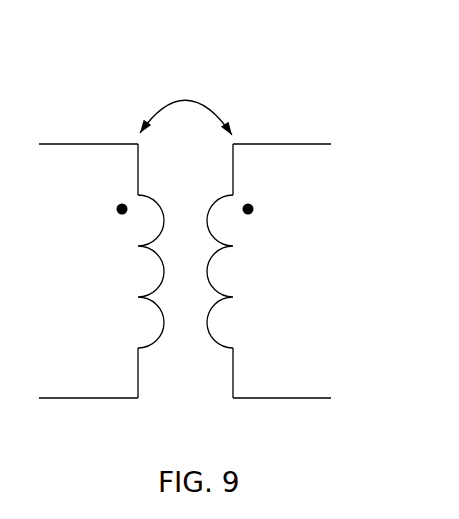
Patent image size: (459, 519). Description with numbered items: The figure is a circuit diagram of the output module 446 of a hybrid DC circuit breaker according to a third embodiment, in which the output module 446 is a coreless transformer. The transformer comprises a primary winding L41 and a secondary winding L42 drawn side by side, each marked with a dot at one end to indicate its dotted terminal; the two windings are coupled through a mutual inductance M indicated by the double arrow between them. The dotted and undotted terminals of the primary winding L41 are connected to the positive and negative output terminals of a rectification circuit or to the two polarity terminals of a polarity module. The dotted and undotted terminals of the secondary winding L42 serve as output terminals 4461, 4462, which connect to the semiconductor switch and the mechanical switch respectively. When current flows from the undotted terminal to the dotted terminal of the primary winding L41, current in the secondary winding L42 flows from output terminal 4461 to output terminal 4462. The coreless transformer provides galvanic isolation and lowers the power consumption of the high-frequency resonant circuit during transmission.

The output module 446 is at (206, 244).
The output terminal 4461 is at (282, 144).
The output terminal 4462 is at (282, 398).
The primary winding L41 is at (101, 271).
The secondary winding L42 is at (248, 271).
The mutual inductance M is at (186, 117).